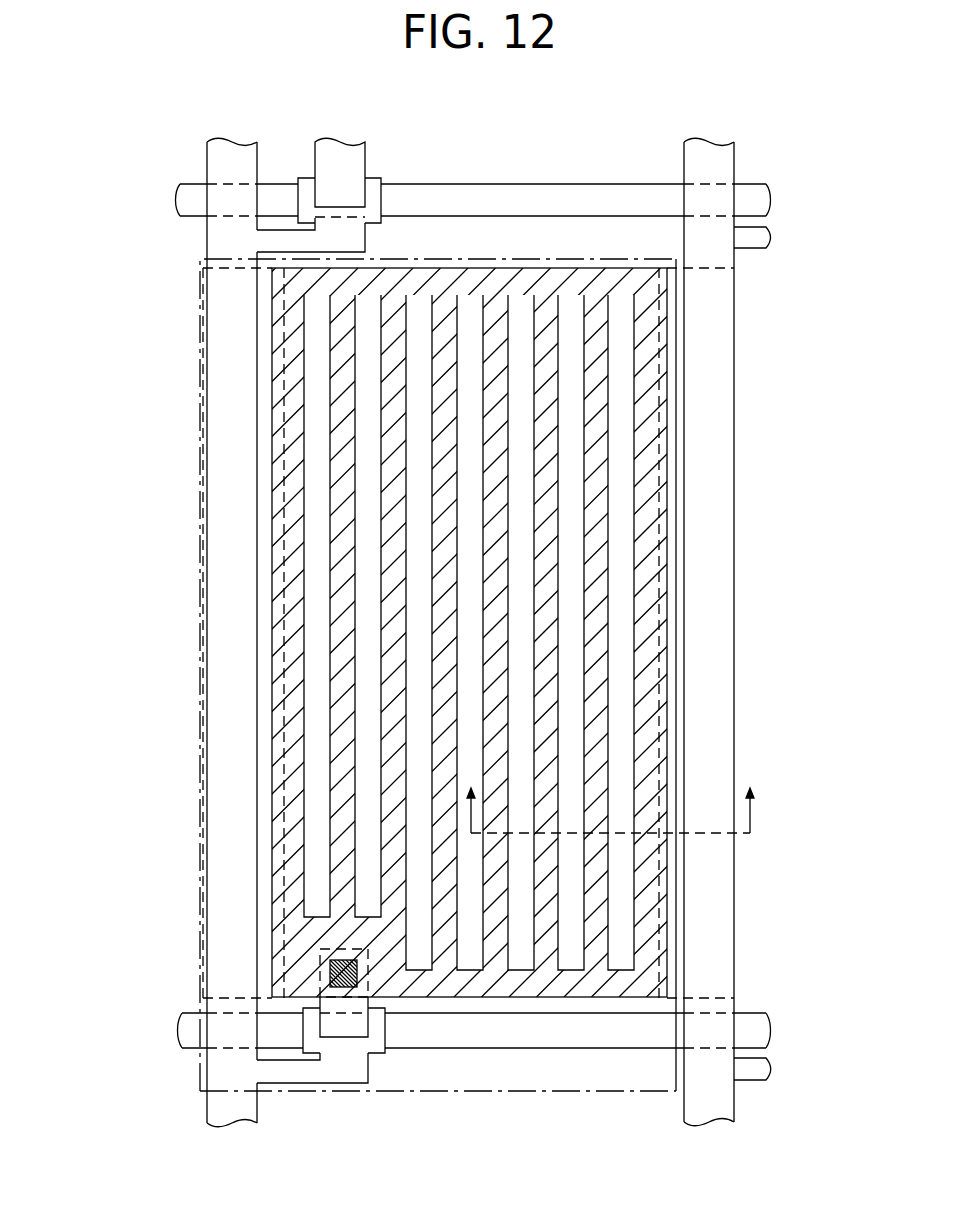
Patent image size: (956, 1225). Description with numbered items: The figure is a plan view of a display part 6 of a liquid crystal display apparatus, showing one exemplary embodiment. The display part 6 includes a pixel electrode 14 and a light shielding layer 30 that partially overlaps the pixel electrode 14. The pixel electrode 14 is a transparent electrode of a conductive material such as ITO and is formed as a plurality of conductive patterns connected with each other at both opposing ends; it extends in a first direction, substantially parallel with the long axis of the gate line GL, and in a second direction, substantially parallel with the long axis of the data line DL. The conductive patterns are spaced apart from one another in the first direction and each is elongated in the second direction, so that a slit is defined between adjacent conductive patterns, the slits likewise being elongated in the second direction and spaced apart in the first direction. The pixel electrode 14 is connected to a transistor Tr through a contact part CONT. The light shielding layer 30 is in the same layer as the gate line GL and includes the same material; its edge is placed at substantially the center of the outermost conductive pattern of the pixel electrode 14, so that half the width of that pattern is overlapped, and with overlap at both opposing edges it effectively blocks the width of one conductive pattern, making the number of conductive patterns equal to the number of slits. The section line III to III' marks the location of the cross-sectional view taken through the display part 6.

The gate line GL is at (503, 183).
The data line DL is at (215, 586).
The light shielding layer 30 is at (218, 268).
The pixel electrode 14 is at (285, 338).
The contact part CONT is at (330, 964).
The transistor Tr is at (380, 1030).
The display part 6 is at (610, 1092).
The section line III is at (606, 799).
The section line III' is at (753, 799).